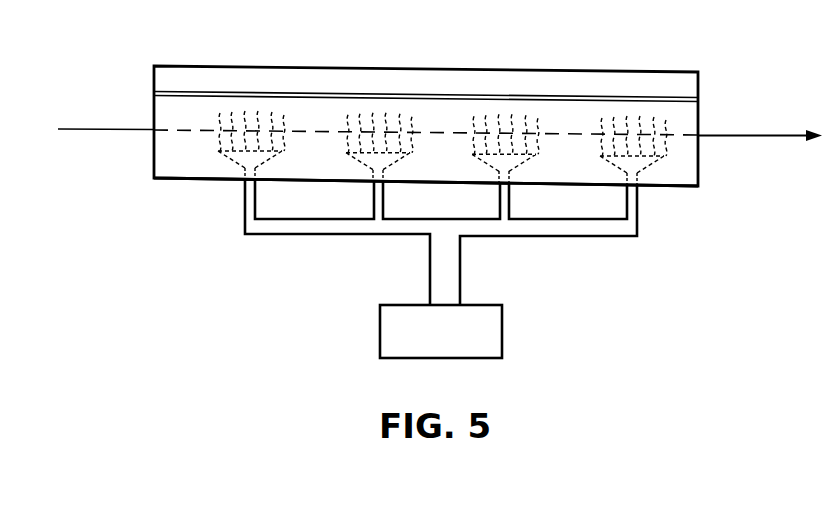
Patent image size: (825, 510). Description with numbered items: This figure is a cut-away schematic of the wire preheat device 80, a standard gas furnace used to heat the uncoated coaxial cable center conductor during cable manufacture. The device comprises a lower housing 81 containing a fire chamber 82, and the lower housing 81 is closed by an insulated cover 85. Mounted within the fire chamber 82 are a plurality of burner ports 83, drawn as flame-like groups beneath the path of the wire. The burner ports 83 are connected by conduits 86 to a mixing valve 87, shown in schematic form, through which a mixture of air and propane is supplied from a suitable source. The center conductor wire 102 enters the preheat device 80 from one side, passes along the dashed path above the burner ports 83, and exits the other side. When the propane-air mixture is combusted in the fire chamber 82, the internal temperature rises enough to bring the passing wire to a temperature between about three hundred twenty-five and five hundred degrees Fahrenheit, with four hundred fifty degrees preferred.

The wire preheat device 80 is at (166, 193).
The lower housing 81 is at (700, 188).
The fire chamber 82 is at (692, 163).
The burner ports 83 is at (266, 160).
The insulated cover 85 is at (500, 70).
The conduits 86 is at (533, 237).
The mixing valve 87 is at (453, 341).
The center conductor wire 102 is at (131, 127).